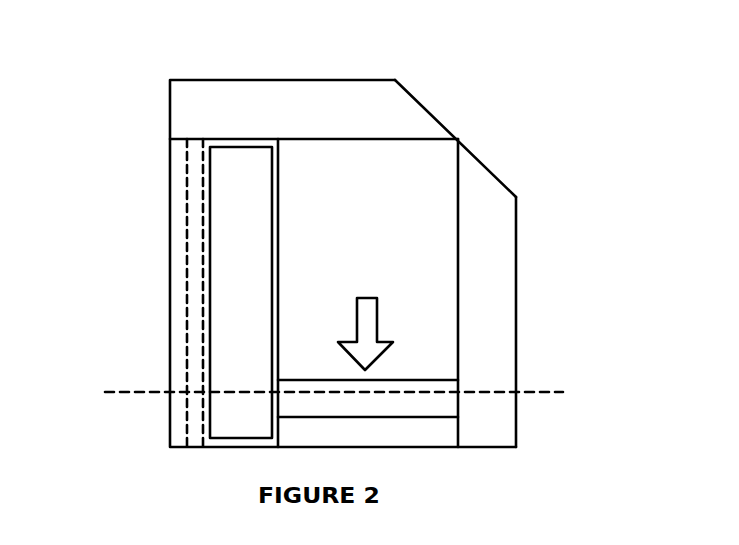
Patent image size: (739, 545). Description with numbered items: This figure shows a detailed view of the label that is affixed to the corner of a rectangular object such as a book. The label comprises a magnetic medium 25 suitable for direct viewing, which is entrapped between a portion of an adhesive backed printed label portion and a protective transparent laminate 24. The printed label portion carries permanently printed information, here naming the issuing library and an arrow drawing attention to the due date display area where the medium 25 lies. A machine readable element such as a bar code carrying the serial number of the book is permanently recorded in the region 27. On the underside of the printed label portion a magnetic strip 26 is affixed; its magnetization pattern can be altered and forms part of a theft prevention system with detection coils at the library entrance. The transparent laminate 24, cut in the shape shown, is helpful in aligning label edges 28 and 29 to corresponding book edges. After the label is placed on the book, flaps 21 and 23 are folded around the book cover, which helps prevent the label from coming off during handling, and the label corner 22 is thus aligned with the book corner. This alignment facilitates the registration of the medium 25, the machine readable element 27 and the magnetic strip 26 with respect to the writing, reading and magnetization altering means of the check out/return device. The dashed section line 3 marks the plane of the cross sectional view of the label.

The flap 21 is at (358, 95).
The label corner 22 is at (460, 138).
The flap 23 is at (495, 255).
The protective transparent laminate 24 is at (442, 322).
The magnetic medium 25 is at (440, 396).
The magnetic strip 26 is at (197, 253).
The machine readable element region 27 is at (222, 168).
The label edge 28 is at (327, 139).
The label edge 29 is at (460, 182).
The section line 3 is at (139, 393).